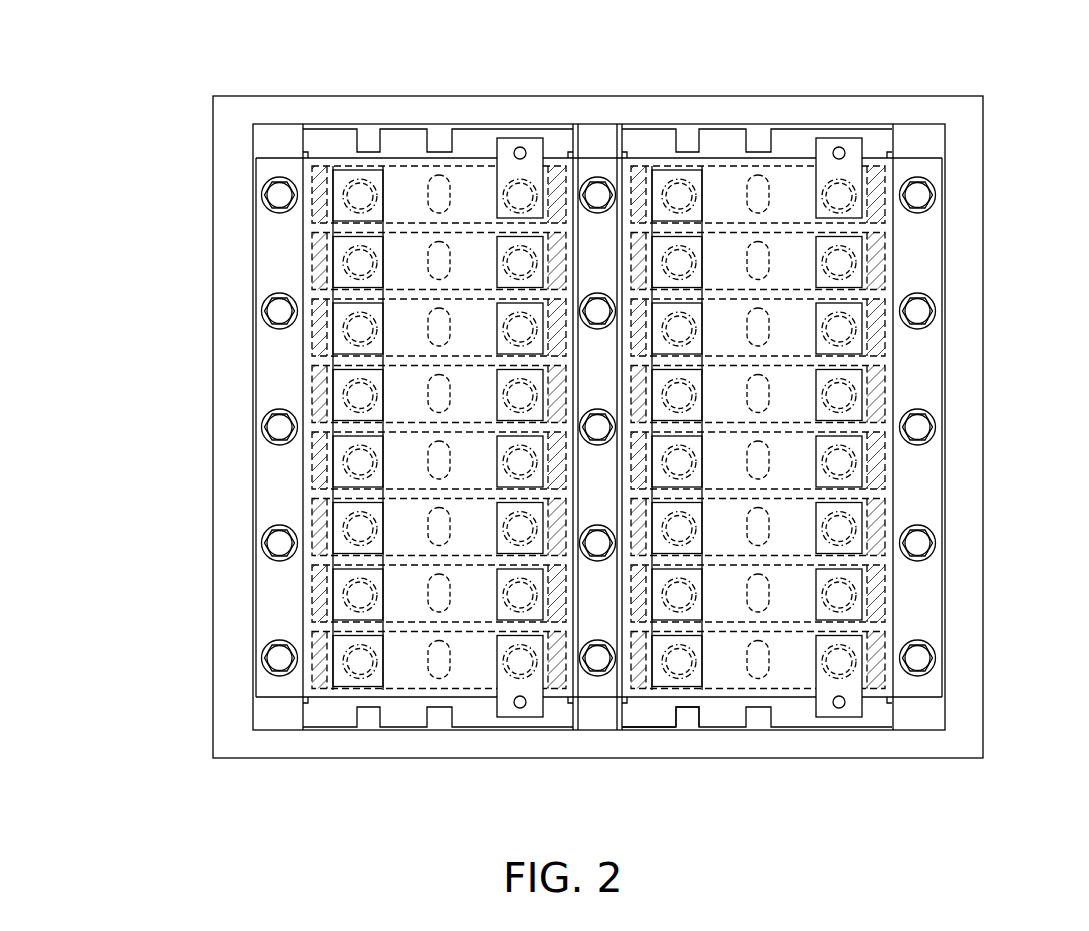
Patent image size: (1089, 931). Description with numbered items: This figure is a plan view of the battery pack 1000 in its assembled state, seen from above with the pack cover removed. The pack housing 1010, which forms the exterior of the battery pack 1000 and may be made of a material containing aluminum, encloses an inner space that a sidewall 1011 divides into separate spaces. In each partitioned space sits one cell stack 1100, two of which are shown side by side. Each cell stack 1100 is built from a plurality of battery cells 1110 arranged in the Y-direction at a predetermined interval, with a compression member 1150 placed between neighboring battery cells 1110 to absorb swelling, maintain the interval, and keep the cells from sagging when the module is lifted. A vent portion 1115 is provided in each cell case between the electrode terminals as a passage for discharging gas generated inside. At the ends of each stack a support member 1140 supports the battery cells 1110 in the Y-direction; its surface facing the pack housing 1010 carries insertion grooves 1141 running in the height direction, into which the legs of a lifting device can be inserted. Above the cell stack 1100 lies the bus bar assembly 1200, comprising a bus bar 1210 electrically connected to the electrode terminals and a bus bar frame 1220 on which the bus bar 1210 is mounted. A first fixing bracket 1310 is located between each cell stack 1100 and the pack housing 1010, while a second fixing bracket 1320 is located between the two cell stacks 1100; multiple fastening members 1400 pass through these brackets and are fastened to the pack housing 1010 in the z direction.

The battery pack 1000 is at (127, 54).
The pack housing 1010 is at (972, 141).
The sidewall 1011 is at (262, 142).
The cell stack 1100 is at (438, 475).
The battery cell 1110 is at (439, 427).
The vent portion 1115 is at (439, 427).
The support member 1140 is at (757, 428).
The insertion groove 1141 is at (687, 717).
The compression member 1150 is at (758, 427).
The bus bar assembly 1200 is at (438, 427).
The bus bar 1210 is at (358, 428).
The bus bar frame 1220 is at (358, 428).
The first fixing bracket 1310 is at (268, 362).
The second fixing bracket 1320 is at (596, 166).
The fastening member 1400 is at (918, 428).